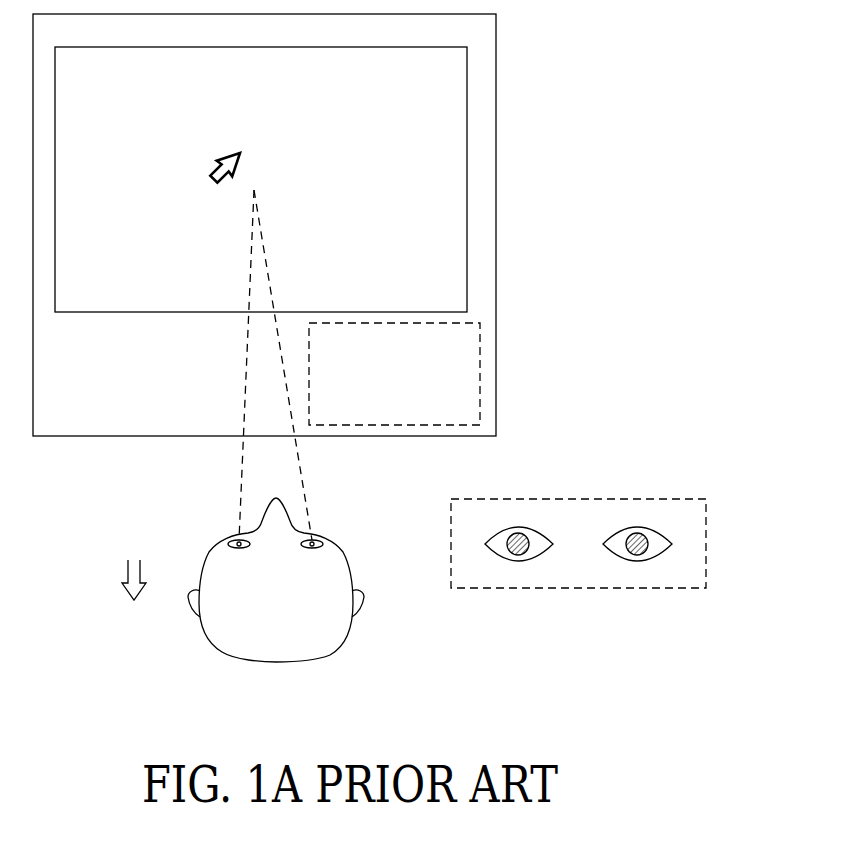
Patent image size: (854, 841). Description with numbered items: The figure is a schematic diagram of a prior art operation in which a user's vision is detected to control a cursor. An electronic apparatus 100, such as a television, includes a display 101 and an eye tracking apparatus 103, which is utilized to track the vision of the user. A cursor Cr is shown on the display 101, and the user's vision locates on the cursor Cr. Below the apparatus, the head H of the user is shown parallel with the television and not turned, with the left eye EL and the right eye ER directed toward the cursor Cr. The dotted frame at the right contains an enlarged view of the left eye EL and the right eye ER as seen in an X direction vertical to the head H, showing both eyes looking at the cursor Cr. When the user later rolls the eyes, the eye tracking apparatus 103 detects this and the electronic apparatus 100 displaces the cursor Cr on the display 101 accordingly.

The electronic apparatus 100 is at (496, 55).
The display 101 is at (467, 112).
The cursor Cr is at (259, 167).
The eye tracking apparatus 103 is at (480, 342).
The head H is at (345, 566).
The left eye EL is at (239, 540).
The right eye ER is at (312, 540).
The X direction X is at (134, 566).